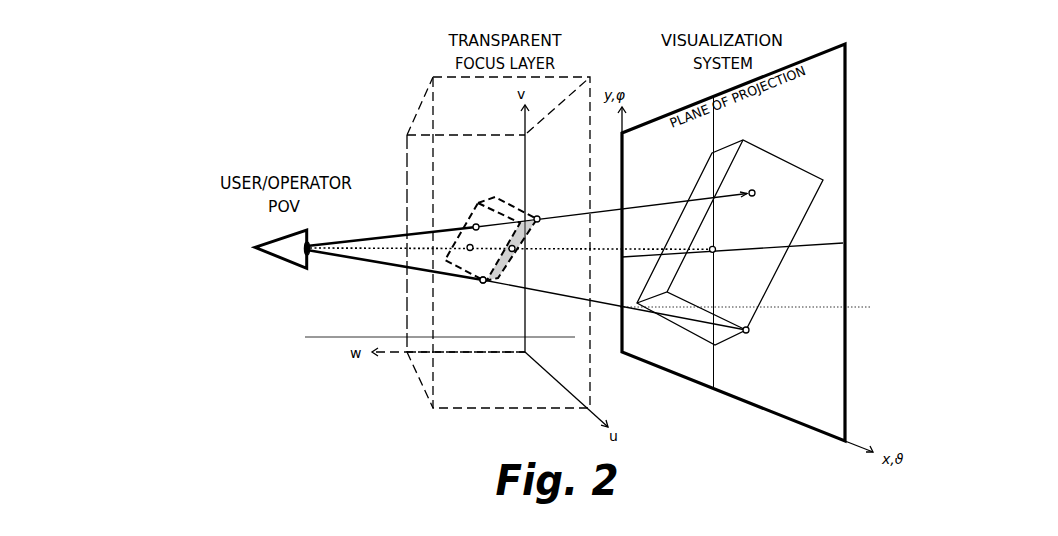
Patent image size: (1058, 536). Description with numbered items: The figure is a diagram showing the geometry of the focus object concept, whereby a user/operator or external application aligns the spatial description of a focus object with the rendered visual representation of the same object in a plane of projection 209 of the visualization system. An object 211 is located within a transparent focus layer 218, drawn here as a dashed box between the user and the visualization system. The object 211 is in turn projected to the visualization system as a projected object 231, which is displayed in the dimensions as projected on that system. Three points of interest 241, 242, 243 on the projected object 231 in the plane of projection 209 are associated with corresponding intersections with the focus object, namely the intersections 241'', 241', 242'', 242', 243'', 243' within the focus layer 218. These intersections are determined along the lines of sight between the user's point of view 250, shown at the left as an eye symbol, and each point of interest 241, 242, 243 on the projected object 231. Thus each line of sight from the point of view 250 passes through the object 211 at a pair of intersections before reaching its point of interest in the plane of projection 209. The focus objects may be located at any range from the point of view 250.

The plane of projection 209 is at (733, 400).
The object 211 is at (507, 200).
The transparent focus layer 218 is at (405, 162).
The projected object 231 is at (692, 187).
The point of interest 241 is at (762, 176).
The focus object intersection 241' is at (553, 198).
The focus object intersection 241'' is at (468, 195).
The point of interest 242 is at (736, 233).
The focus object intersection 242' is at (546, 265).
The focus object intersection 242'' is at (411, 227).
The point of interest 243 is at (775, 341).
The focus object intersection 243' is at (421, 287).
The focus object intersection 243'' is at (391, 287).
The point of view 250 is at (272, 242).